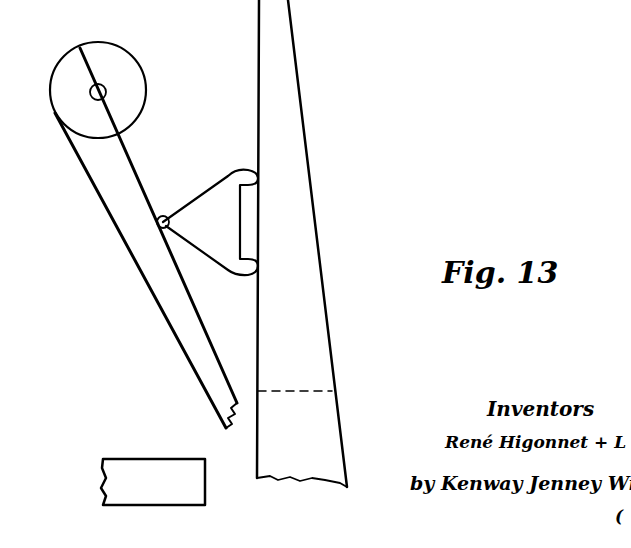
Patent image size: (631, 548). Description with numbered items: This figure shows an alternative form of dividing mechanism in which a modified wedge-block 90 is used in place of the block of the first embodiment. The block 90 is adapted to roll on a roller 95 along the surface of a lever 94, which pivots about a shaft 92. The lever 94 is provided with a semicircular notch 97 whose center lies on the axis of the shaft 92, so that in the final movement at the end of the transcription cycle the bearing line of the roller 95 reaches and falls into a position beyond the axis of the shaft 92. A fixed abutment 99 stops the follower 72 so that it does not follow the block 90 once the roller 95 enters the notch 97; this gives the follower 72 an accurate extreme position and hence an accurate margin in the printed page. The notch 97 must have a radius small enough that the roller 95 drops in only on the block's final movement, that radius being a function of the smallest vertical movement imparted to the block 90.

The follower 72 is at (300, 90).
The wedge-block 90 is at (217, 186).
The shaft 92 is at (145, 90).
The lever 94 is at (178, 325).
The roller 95 is at (163, 215).
The semicircular notch 97 is at (104, 88).
The fixed abutment 99 is at (160, 460).